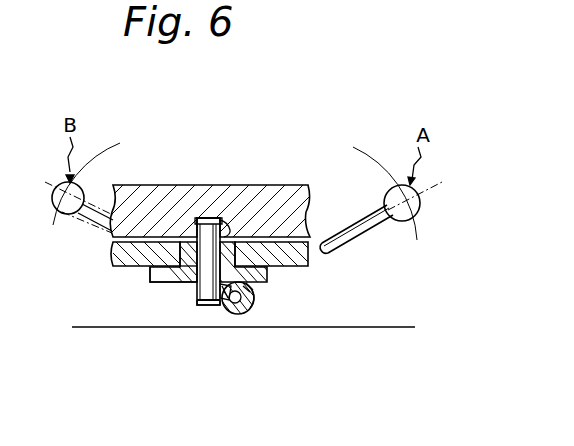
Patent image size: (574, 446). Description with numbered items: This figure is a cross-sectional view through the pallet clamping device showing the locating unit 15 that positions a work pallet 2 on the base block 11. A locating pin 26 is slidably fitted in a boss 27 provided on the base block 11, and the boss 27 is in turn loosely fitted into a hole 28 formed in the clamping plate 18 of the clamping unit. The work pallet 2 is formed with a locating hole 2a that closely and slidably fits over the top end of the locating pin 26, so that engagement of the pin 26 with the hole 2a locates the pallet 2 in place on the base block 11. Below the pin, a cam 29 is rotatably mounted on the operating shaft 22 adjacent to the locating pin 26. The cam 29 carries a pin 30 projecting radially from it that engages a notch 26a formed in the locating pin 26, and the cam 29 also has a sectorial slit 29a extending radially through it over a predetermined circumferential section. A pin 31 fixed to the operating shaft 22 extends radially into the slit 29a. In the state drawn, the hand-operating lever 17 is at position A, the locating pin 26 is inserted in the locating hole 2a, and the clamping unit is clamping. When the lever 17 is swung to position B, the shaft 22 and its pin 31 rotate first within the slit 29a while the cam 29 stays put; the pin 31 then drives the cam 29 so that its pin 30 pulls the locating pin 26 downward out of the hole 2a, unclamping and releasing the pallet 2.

The work pallet 2 is at (173, 192).
The locating hole 2a is at (226, 236).
The clamping plate 18 is at (280, 248).
The base block 11 is at (273, 274).
The boss 27 is at (148, 271).
The locating pin 26 is at (205, 220).
The notch 26a is at (198, 304).
The locating unit 15 is at (193, 284).
The hole 28 is at (190, 287).
The pin 30 is at (216, 302).
The cam 29 is at (234, 314).
The operating shaft 22 is at (237, 305).
The pin 31 is at (250, 308).
The sectorial slit 29a is at (255, 298).
The hand-operating lever 17 is at (418, 205).